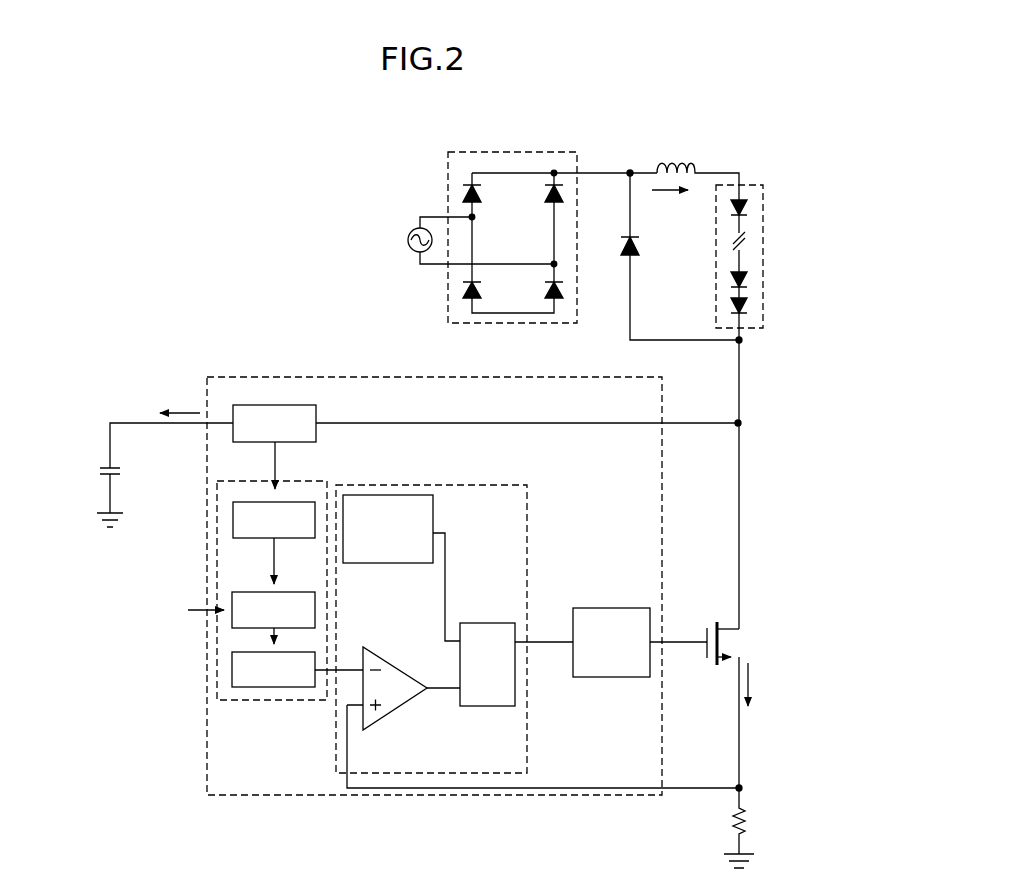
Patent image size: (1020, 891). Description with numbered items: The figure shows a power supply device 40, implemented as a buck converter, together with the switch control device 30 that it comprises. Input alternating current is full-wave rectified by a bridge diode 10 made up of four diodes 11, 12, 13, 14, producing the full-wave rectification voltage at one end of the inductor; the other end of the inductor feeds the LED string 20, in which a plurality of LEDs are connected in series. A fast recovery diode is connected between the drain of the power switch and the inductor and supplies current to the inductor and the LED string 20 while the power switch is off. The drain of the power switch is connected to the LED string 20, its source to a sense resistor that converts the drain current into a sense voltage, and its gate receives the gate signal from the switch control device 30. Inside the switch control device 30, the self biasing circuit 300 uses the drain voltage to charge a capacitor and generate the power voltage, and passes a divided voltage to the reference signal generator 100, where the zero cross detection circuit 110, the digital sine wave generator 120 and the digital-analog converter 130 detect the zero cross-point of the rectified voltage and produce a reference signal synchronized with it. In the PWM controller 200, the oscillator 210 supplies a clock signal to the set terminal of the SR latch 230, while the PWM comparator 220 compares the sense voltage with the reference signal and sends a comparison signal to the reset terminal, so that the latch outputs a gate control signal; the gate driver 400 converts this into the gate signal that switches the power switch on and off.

The bridge diode 10 is at (448, 174).
The diode 11 is at (481, 191).
The diode 12 is at (563, 192).
The diode 13 is at (481, 287).
The diode 14 is at (563, 287).
The LED string 20 is at (763, 330).
The switch control device 30 is at (330, 795).
The power supply device 40 is at (220, 182).
The reference signal generator 100 is at (245, 700).
The zero cross detection circuit (ZCDC) 110 is at (233, 532).
The digital sine wave generator (DSG) 120 is at (232, 628).
The digital-analog converter (DAC) 130 is at (232, 683).
The PWM controller 200 is at (494, 485).
The oscillator 210 is at (388, 495).
The PWM comparator 220 is at (406, 673).
The SR latch 230 is at (515, 693).
The self VCC biasing circuit (SVBC) 300 is at (299, 404).
The gate driver 400 is at (625, 608).